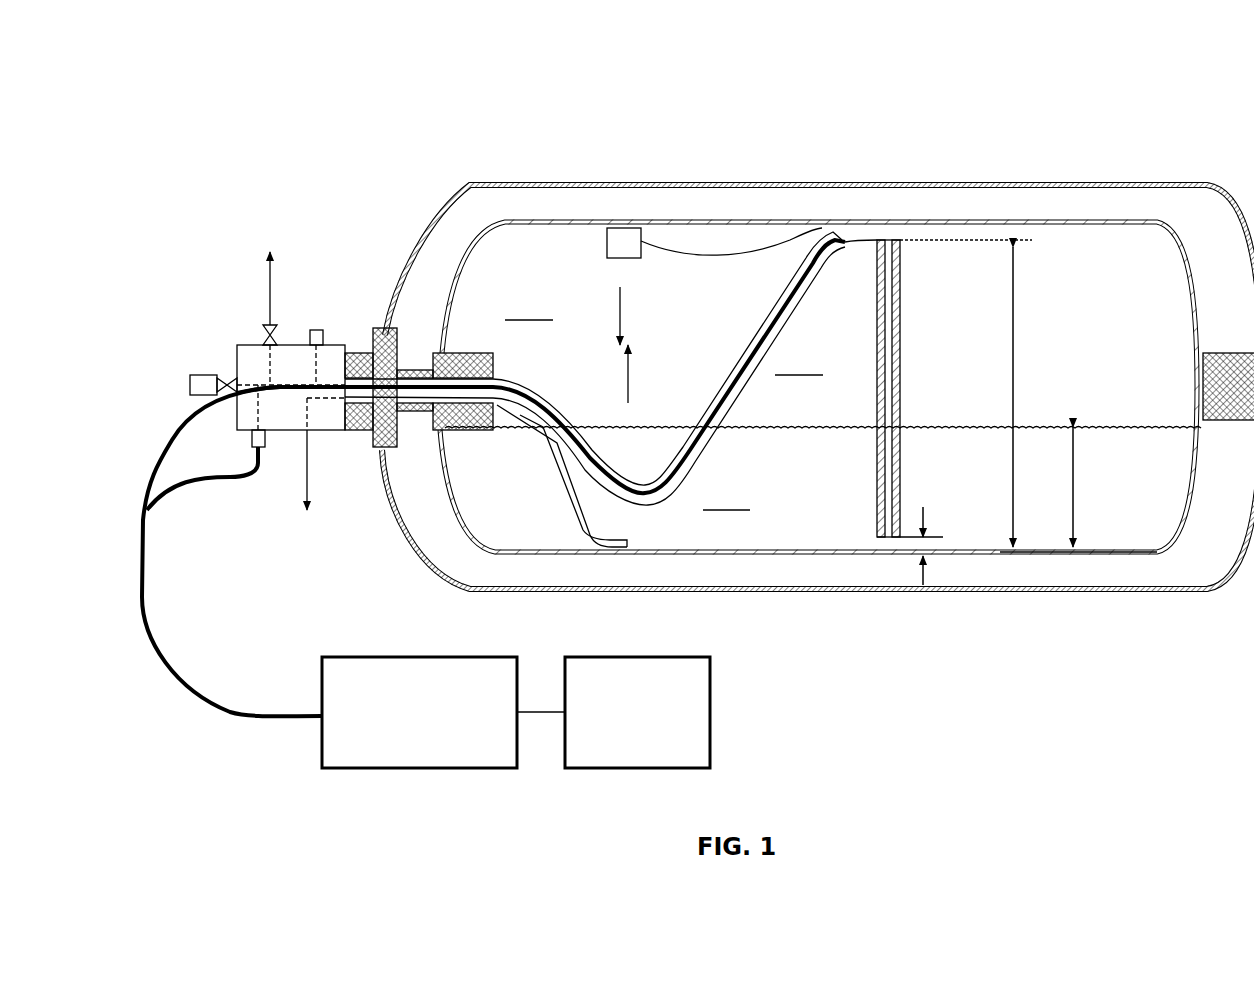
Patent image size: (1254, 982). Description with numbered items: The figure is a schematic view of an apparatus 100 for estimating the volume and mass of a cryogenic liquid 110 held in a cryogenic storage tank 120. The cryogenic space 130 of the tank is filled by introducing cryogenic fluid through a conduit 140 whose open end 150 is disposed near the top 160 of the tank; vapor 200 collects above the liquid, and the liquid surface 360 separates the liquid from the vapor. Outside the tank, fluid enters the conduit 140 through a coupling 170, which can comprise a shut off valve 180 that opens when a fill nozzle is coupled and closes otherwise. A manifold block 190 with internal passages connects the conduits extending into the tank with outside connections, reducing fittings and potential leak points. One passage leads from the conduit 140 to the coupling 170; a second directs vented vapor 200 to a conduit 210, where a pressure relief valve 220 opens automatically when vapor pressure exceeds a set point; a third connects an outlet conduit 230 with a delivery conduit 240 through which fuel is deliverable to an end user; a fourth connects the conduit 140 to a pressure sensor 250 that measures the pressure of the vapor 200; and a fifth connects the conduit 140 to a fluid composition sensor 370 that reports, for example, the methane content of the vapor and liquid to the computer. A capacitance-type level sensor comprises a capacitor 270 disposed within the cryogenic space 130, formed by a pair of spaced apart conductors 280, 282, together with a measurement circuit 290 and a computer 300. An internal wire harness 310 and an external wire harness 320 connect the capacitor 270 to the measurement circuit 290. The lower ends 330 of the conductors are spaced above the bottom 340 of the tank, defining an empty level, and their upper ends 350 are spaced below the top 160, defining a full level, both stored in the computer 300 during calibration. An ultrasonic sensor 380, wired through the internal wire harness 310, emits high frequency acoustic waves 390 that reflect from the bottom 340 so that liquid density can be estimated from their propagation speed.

The apparatus 100 is at (783, 167).
The cryogenic liquid 110 is at (727, 495).
The cryogenic storage tank 120 is at (1070, 182).
The cryogenic space 130 is at (529, 305).
The conduit 140 is at (693, 422).
The open end 150 is at (813, 255).
The top 160 is at (1095, 226).
The coupling 170 is at (190, 382).
The shut off valve 180 is at (235, 386).
The manifold block 190 is at (237, 345).
The vapor 200 is at (541, 366).
The conduit 210 is at (268, 283).
The pressure relief valve 220 is at (268, 325).
The outlet conduit 230 is at (570, 505).
The delivery conduit 240 is at (305, 466).
The pressure sensor 250 is at (316, 330).
The capacitor 270 is at (902, 344).
The conductor 280 is at (877, 440).
The conductor 282 is at (900, 402).
The measurement circuit 290 is at (430, 657).
The computer 300 is at (665, 657).
The internal wire harness 310 is at (823, 253).
The external wire harness 320 is at (143, 577).
The lower ends 330 is at (896, 540).
The bottom 340 is at (1130, 549).
The upper ends 350 is at (881, 240).
The liquid level 360 is at (1105, 427).
The fluid composition sensor 370 is at (263, 447).
The ultrasonic sensor 380 is at (607, 242).
The acoustic waves 390 is at (620, 320).